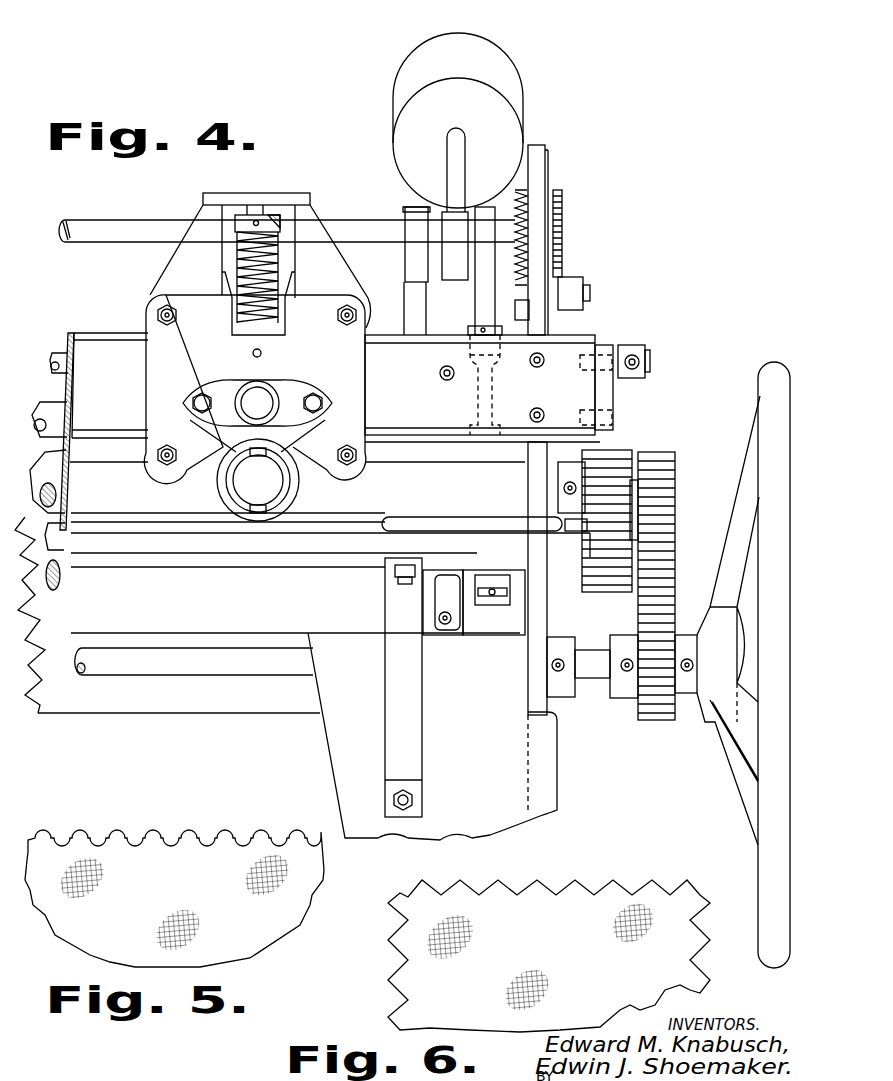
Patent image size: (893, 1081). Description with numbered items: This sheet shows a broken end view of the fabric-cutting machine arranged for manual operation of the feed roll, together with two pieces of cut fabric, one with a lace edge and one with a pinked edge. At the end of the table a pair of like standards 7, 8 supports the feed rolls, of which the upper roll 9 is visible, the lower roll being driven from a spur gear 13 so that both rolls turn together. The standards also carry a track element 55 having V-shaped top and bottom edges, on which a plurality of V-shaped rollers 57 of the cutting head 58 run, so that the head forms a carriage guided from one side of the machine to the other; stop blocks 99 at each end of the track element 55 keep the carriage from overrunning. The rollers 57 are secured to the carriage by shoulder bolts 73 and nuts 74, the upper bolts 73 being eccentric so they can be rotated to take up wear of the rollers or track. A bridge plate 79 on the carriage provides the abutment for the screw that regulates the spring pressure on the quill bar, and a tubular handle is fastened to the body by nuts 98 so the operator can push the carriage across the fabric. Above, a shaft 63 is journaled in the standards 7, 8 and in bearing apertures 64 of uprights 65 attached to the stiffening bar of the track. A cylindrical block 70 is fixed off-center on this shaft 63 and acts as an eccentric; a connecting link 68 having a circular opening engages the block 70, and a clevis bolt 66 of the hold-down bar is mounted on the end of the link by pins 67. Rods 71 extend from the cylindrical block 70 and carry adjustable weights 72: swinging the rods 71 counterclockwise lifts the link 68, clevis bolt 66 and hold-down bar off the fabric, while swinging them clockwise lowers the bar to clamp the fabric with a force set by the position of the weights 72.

The adjustable weights 72 is at (490, 62).
The rods 71 is at (462, 132).
The cylindrical block 70 is at (462, 272).
The bearing apertures 64 is at (416, 210).
The uprights 65 is at (410, 290).
The connecting links 68 is at (478, 300).
The pins 67 is at (460, 333).
The shaft 63 is at (340, 220).
The bridge plate 79 is at (212, 193).
The V-shaped rollers 57 is at (145, 300).
The cutting head 58 is at (157, 410).
The nuts 74 is at (178, 315).
The shoulder bolts 73 is at (168, 325).
The nuts 98 is at (205, 395).
The track element 55 is at (80, 345).
The standard 7 is at (545, 296).
The clevis bolt 66 is at (490, 395).
The stop blocks 99 is at (605, 400).
The spur gear 13 is at (677, 470).
The standard 8 is at (379, 247).
The roll 9 is at (285, 166).